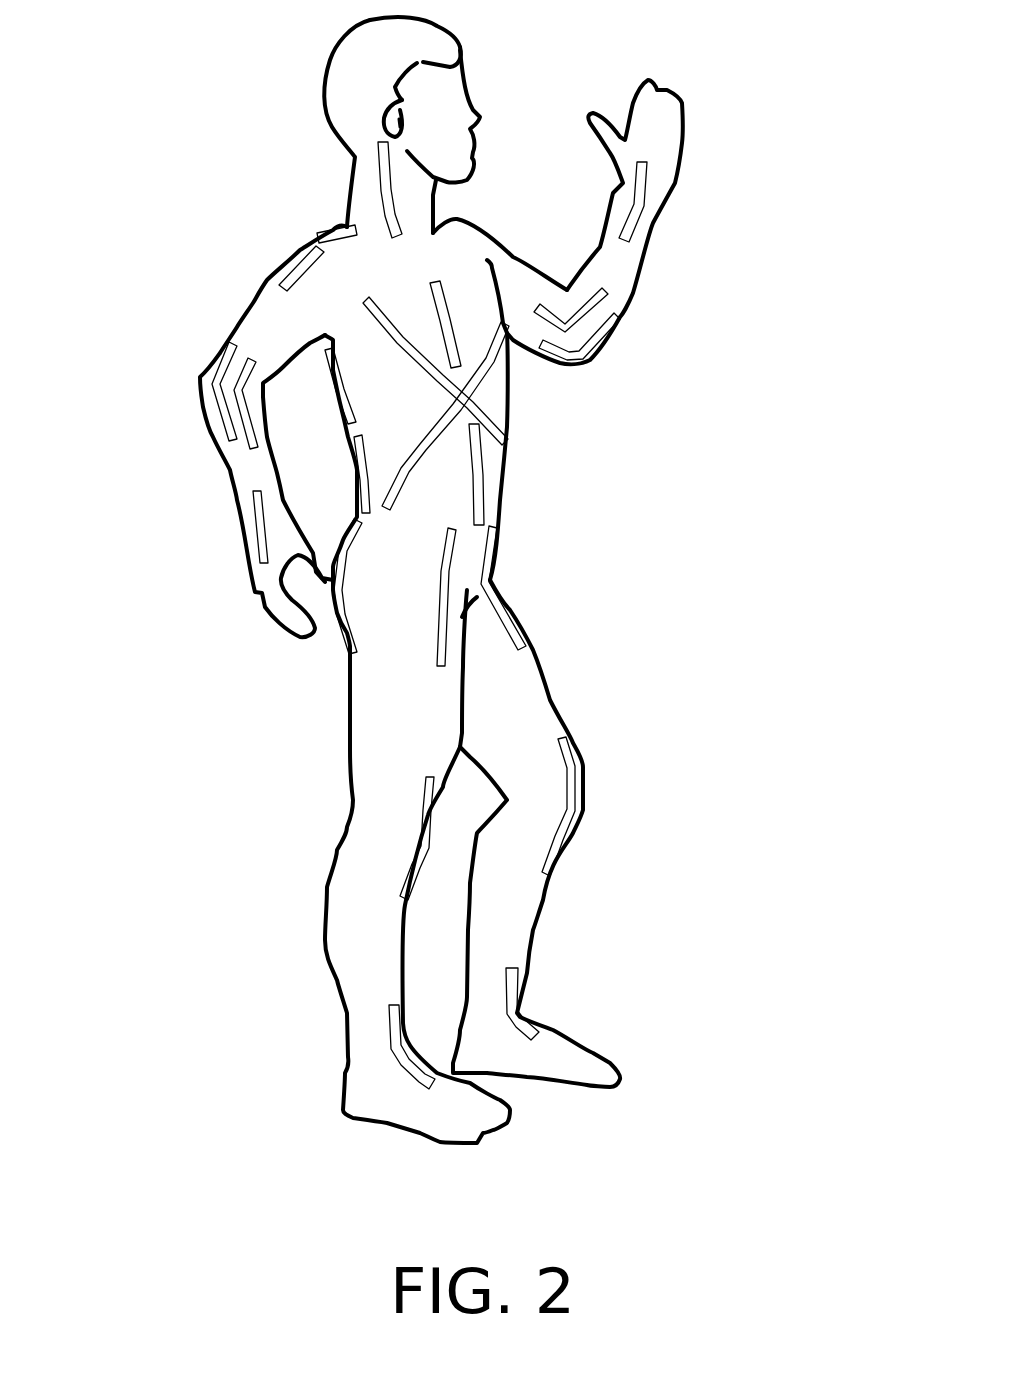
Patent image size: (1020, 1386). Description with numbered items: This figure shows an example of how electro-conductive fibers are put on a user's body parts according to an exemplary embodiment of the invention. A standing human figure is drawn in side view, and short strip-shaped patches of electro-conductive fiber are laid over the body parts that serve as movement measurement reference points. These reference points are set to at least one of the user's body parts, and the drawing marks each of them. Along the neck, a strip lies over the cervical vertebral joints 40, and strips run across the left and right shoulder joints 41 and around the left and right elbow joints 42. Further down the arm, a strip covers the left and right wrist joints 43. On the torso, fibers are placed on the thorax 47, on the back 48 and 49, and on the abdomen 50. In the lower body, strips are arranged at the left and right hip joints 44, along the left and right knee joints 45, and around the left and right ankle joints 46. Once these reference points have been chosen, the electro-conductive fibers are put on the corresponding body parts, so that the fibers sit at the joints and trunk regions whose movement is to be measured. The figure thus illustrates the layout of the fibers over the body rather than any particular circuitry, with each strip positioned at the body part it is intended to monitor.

The cervical vertebral joints 40 is at (383, 183).
The left and right shoulder joints 41 is at (313, 240).
The left and right elbow joints 42 is at (208, 382).
The left and right wrist joints 43 is at (263, 530).
The left and right hip joints 44 is at (340, 548).
The left and right knee joints 45 is at (422, 832).
The left and right ankle joints 46 is at (393, 1040).
The thorax 47 is at (457, 343).
The back 48 is at (352, 402).
The back 49 is at (360, 477).
The abdomen 50 is at (480, 470).